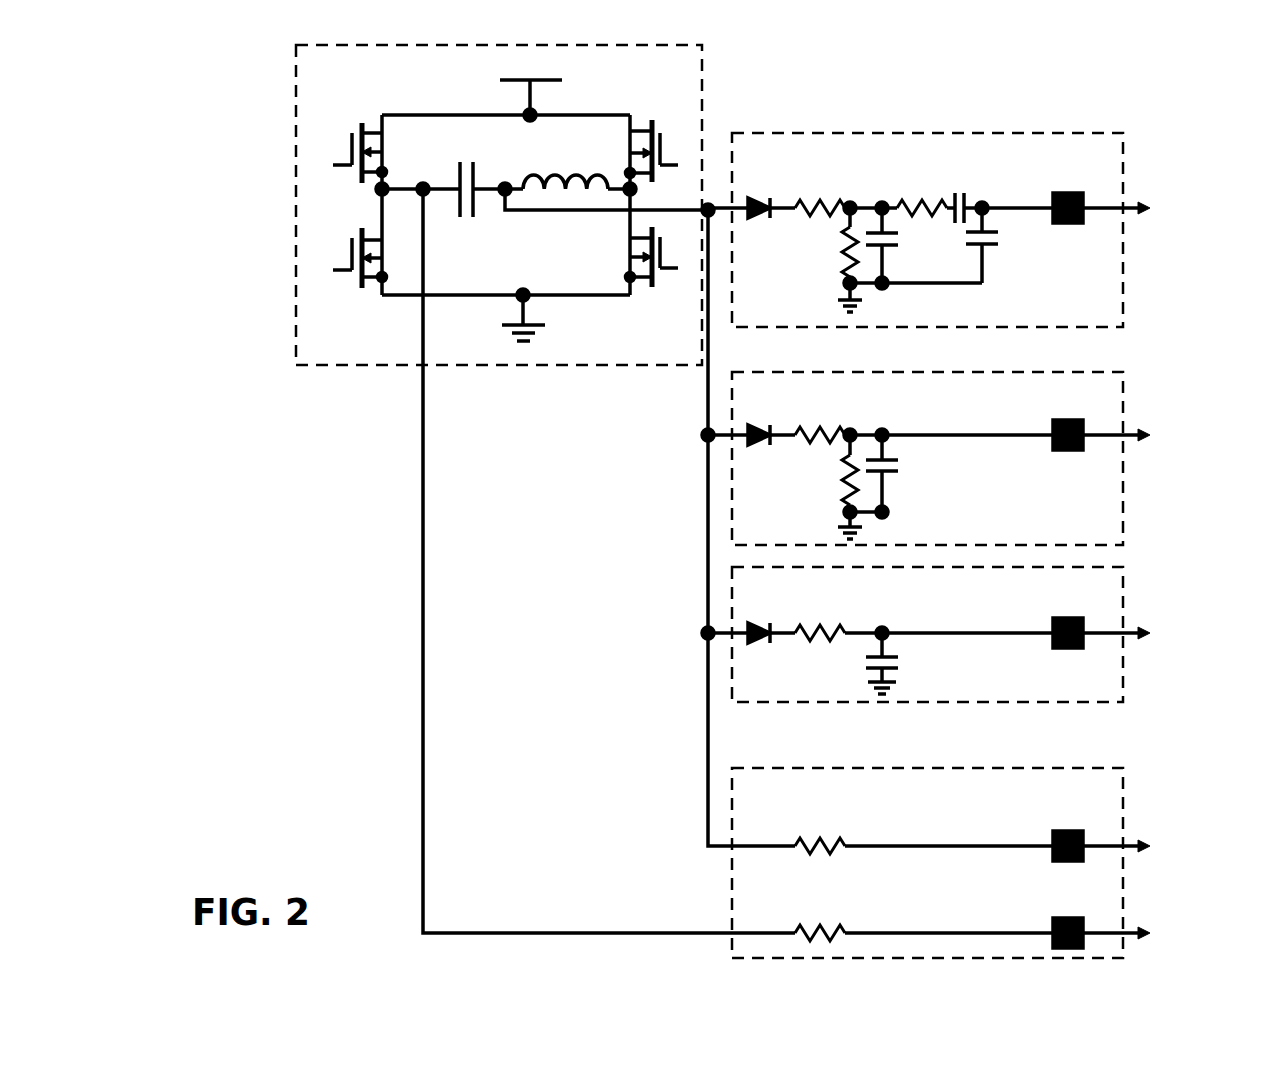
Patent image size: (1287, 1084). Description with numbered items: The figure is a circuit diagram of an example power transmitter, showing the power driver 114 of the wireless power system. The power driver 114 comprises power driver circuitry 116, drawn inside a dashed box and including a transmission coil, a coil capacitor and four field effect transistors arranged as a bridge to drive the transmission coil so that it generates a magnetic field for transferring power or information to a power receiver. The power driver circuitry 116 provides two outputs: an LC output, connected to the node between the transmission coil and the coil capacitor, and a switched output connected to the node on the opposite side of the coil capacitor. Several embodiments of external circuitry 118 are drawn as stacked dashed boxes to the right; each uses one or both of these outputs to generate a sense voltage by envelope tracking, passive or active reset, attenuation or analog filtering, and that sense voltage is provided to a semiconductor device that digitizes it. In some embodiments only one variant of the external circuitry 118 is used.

The power driver 114 is at (212, 318).
The power driver circuitry 116 is at (296, 152).
The external circuitry 118 is at (1125, 302).